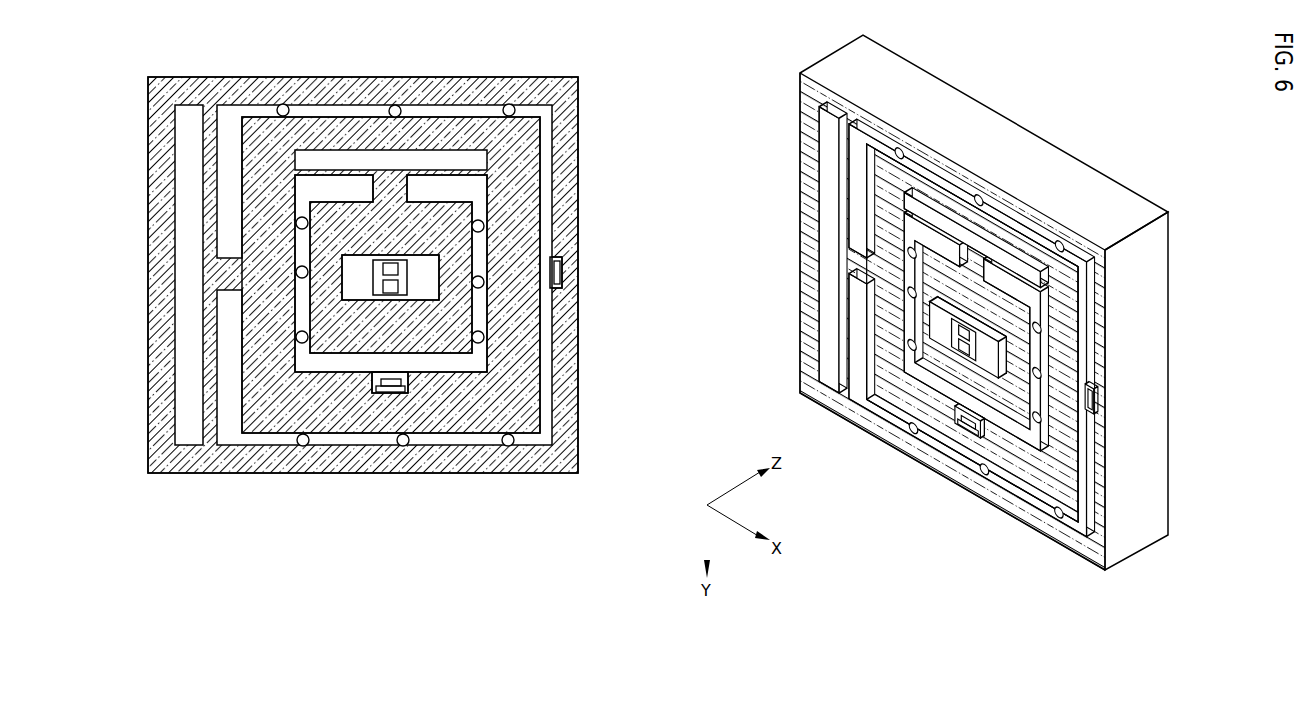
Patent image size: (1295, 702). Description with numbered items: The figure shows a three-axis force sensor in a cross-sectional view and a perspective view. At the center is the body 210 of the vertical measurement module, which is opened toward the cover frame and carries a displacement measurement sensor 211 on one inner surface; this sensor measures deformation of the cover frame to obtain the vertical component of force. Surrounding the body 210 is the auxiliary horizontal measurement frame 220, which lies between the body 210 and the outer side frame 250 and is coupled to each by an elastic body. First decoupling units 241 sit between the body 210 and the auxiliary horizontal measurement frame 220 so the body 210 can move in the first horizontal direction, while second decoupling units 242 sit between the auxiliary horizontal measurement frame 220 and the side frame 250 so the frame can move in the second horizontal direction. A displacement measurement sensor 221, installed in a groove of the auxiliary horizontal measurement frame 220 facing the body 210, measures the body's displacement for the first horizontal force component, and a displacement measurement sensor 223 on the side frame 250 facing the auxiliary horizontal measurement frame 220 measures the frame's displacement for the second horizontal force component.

The body 210 is at (335, 337).
The displacement measurement sensor 211 is at (392, 262).
The auxiliary horizontal measurement frame 220 is at (268, 405).
The displacement measurement sensor 221 is at (385, 392).
The displacement measurement sensor 223 is at (563, 275).
The first decoupling units 241 is at (488, 230).
The second decoupling units 242 is at (509, 104).
The side frame 250 is at (582, 149).